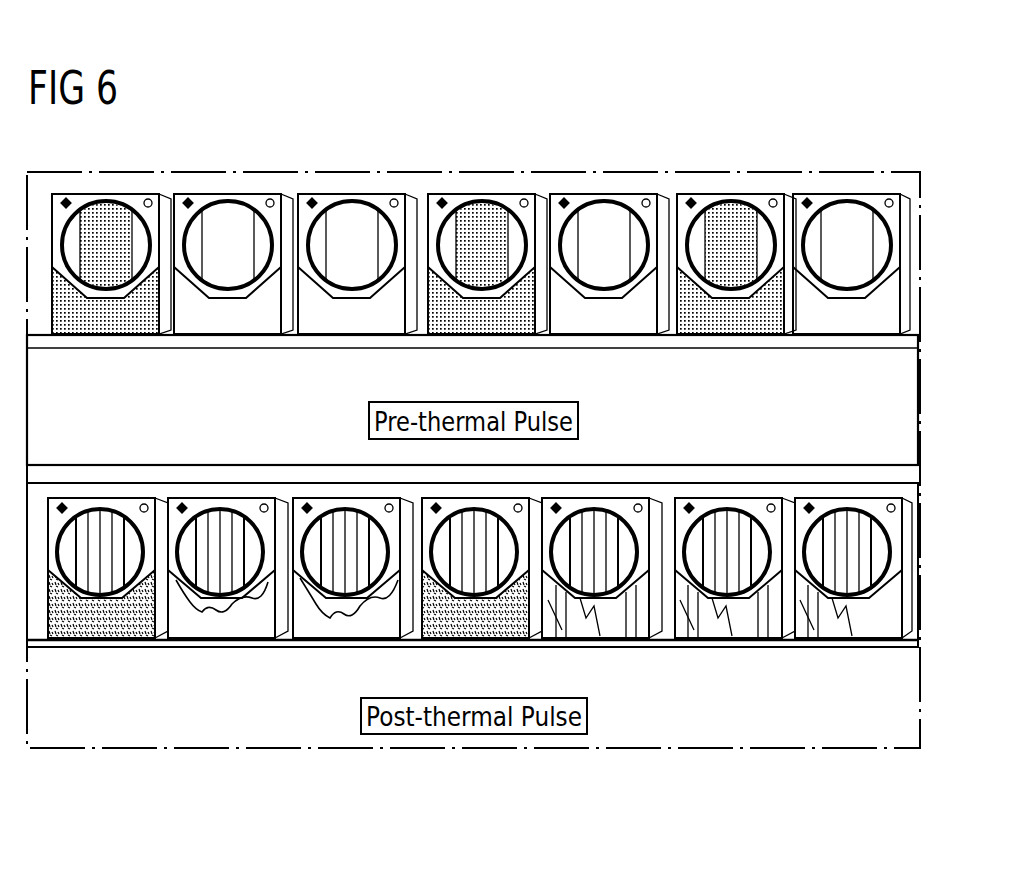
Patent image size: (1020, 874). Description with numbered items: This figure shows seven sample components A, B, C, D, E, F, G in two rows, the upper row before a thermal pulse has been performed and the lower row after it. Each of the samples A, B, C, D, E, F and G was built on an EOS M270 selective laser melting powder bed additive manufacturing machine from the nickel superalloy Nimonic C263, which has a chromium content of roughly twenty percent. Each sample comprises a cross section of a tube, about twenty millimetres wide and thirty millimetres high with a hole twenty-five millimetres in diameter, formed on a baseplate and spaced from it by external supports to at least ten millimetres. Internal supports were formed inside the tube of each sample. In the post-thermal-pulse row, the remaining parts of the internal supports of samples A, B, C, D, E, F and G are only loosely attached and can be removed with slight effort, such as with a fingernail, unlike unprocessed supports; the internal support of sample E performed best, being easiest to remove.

The sample A is at (145, 328).
The sample B is at (267, 323).
The sample C is at (392, 323).
The sample D is at (518, 323).
The sample E is at (640, 323).
The sample F is at (763, 323).
The sample G is at (887, 323).